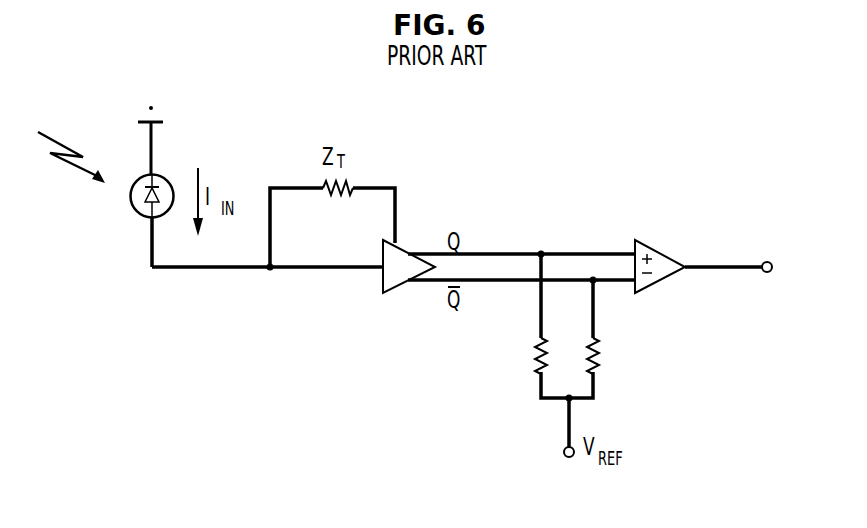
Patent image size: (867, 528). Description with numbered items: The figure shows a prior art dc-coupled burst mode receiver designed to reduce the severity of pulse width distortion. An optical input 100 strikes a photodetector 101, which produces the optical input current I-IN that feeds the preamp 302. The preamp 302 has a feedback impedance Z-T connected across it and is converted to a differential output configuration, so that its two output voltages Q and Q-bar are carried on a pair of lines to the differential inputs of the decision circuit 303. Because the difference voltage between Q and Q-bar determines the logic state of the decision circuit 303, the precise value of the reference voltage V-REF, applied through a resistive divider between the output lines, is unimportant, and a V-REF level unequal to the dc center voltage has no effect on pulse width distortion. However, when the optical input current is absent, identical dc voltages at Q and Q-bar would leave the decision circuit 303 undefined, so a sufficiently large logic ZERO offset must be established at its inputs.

The incident light signal 100 is at (65, 143).
The photodiode 101 is at (142, 212).
The preamp 302 is at (382, 248).
The decision circuit 303 is at (660, 282).